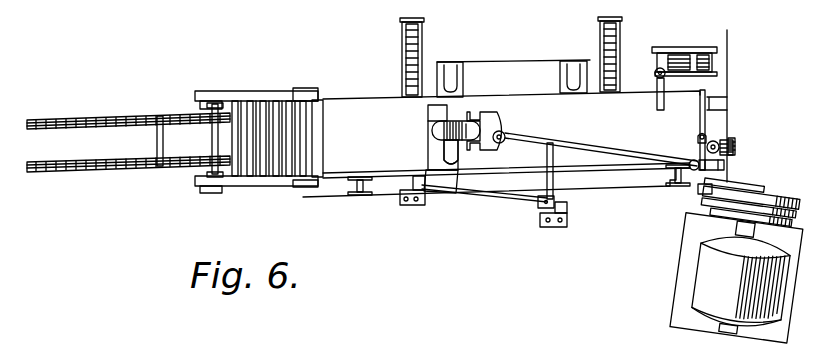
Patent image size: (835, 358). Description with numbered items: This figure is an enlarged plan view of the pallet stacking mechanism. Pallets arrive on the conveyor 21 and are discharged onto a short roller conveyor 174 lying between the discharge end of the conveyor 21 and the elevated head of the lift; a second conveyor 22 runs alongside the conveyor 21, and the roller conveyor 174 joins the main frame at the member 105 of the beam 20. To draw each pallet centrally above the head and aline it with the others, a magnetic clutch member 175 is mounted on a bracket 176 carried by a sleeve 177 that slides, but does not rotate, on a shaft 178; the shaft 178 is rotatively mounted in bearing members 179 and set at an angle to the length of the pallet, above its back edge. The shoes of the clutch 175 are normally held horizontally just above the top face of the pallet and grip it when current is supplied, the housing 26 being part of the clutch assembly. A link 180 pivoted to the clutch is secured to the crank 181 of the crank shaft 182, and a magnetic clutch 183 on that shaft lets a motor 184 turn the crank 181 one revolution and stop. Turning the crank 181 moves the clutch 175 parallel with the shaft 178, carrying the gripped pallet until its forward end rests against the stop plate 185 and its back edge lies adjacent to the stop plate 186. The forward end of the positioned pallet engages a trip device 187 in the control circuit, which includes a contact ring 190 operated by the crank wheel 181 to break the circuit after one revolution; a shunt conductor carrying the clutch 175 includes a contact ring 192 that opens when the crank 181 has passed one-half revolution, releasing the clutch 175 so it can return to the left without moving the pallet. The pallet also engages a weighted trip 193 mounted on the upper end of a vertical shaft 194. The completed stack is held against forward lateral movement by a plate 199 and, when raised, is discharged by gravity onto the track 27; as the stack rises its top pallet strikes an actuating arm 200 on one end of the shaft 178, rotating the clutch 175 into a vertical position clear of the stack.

The conveyor 21 is at (107, 118).
The lower track 22 is at (200, 159).
The roller conveyor 174 is at (280, 87).
The beam end block 105 is at (322, 103).
The beam 20 is at (501, 144).
The track 27 is at (422, 27).
The plate 199 is at (562, 77).
The magnetic clutch member 175 is at (440, 106).
The housing 26 is at (460, 163).
The bracket 176 is at (430, 152).
The sleeve 177 is at (445, 191).
The shaft 178 is at (500, 197).
The bearing member 179 is at (405, 206).
The actuating arm 200 is at (547, 157).
The link 180 is at (580, 146).
The stop plate 186 is at (341, 180).
The trip device 187 is at (655, 73).
The stop plate 185 is at (700, 130).
The trip 193 is at (698, 138).
The vertical shaft 194 is at (707, 149).
The contact ring 192 is at (698, 192).
The crank shaft 182 is at (759, 178).
The crank 181 is at (791, 187).
The contact ring 190 is at (796, 205).
The magnetic clutch 183 is at (790, 219).
The motor 184 is at (736, 278).